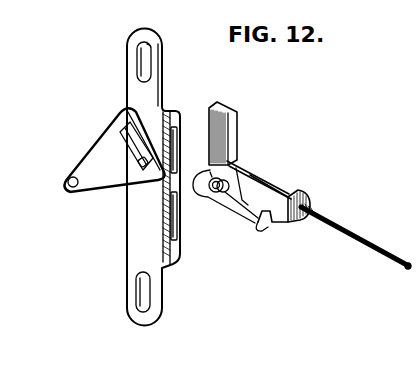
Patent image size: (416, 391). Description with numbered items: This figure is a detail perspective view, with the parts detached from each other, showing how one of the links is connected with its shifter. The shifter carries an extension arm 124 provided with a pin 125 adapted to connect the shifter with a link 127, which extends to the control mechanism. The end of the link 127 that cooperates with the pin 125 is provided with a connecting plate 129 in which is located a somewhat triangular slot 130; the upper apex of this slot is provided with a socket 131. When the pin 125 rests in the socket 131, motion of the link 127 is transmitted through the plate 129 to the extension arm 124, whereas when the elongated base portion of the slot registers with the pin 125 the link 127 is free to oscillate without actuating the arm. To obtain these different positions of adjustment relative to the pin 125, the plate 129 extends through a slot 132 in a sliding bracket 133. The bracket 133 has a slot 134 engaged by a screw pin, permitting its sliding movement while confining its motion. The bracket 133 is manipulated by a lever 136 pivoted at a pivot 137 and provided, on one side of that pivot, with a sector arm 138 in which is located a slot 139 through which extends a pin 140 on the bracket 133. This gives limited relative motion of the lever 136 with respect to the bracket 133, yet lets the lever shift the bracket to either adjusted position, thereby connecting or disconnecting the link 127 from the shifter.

The extension arm 124 is at (230, 136).
The pin 125 is at (218, 192).
The link 127 is at (375, 249).
The connecting plate 129 is at (263, 184).
The triangular slot 130 is at (268, 228).
The socket 131 is at (241, 167).
The slot 132 is at (177, 148).
The sliding bracket 133 is at (135, 242).
The slot 134 is at (141, 68).
The lever 136 is at (114, 150).
The pivot 137 is at (67, 182).
The sector arm 138 is at (53, 197).
The slot 139 is at (128, 134).
The pin 140 is at (120, 188).